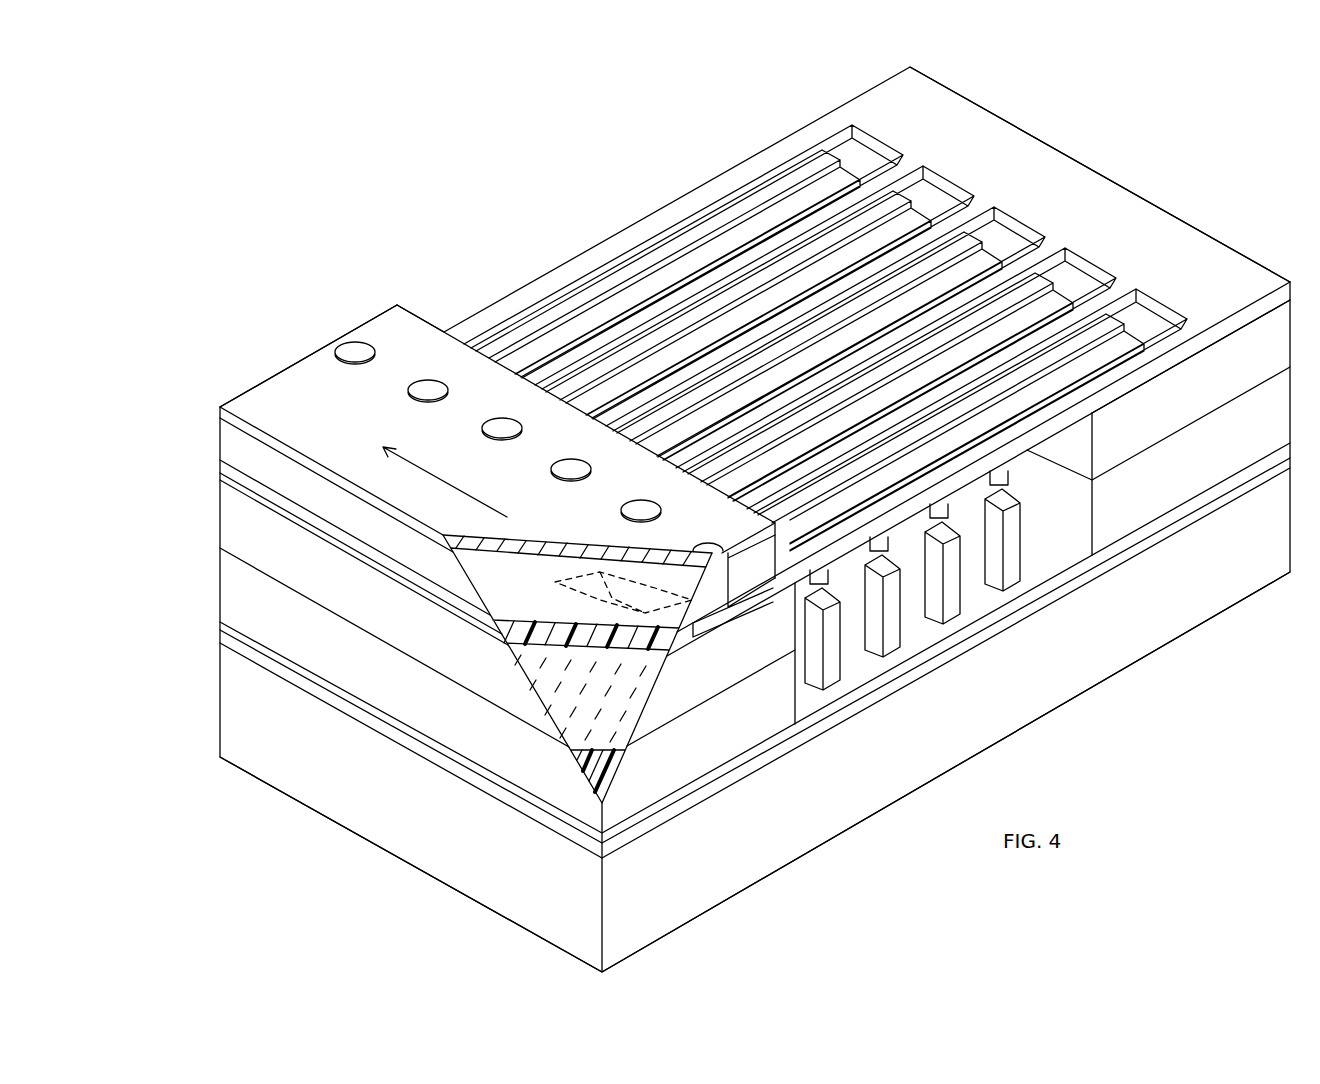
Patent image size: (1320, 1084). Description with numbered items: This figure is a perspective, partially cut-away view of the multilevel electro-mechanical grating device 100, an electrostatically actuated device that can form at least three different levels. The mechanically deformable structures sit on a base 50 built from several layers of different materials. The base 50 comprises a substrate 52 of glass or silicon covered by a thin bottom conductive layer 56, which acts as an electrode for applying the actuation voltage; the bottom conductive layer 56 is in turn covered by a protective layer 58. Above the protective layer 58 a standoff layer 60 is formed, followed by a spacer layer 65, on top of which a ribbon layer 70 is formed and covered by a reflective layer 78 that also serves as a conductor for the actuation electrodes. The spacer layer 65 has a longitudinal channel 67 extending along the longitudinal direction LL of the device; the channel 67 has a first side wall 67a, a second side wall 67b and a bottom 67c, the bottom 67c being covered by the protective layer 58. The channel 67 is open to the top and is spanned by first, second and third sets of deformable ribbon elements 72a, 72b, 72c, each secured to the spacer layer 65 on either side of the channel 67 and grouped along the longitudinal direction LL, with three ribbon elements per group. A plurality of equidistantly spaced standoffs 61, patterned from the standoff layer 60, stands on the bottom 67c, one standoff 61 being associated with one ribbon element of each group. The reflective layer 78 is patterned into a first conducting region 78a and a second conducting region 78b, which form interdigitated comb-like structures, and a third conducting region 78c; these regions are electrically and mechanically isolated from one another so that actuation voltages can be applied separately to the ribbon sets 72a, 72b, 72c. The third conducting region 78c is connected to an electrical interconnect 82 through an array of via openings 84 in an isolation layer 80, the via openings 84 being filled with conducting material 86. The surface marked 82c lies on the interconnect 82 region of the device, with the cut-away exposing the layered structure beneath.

The base 50 is at (327, 851).
The substrate 52 is at (262, 762).
The bottom conductive layer 56 is at (250, 655).
The protective layer 58 is at (232, 634).
The standoff layer 60 is at (230, 590).
The standoffs 61 is at (1010, 565).
The spacer layer 65 is at (228, 530).
The longitudinal channel 67 is at (1072, 527).
The first side wall 67a is at (800, 630).
The second side wall 67b is at (1082, 462).
The bottom 67c is at (927, 640).
The ribbon layer 70 is at (232, 485).
The first set of deformable ribbon elements 72a is at (716, 300).
The second set of deformable ribbon elements 72b is at (613, 335).
The third set of deformable ribbon elements 72c is at (791, 247).
The reflective layer 78 is at (222, 460).
The first conducting region 78a is at (580, 723).
The second conducting region 78b is at (1200, 246).
The third conducting region 78c is at (590, 586).
The isolation layer 80 is at (232, 440).
The electrical interconnect 82 is at (218, 407).
The cover plate surface 82c is at (303, 373).
The via openings 84 is at (730, 607).
The conducting material 86 is at (425, 385).
The multilevel electro-mechanical grating device 100 is at (537, 196).
The longitudinal direction LL is at (460, 488).